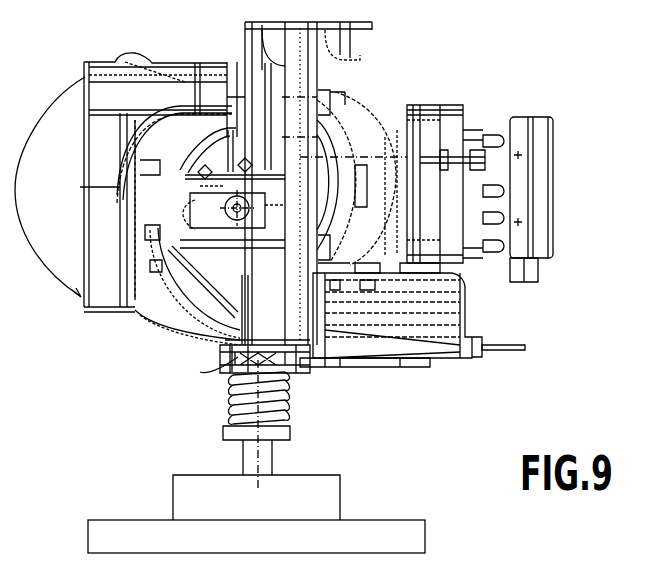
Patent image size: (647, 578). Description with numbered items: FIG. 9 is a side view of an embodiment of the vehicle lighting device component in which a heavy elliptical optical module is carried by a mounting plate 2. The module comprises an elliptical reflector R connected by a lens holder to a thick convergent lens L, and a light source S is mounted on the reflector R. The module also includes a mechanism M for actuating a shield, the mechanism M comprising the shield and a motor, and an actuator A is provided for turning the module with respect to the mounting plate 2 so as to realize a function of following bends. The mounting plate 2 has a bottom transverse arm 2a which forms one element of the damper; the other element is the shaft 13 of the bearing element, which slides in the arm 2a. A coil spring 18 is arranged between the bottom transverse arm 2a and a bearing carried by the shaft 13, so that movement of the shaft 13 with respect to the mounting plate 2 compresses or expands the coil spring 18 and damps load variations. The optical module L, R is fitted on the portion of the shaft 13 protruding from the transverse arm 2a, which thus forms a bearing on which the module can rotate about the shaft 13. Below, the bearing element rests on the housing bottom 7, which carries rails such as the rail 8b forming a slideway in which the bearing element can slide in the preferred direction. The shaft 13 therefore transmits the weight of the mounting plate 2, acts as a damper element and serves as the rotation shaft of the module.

The convergent lens L is at (53, 130).
The mounting plate 2 is at (297, 70).
The bottom transverse arm 2a is at (247, 353).
The mechanism for actuating a shield M is at (198, 208).
The elliptical reflector R is at (357, 115).
The light source S is at (538, 176).
The actuator A is at (438, 298).
The coil spring 18 is at (283, 398).
The shaft 13 is at (245, 449).
The rail 8b is at (330, 488).
The housing bottom 7 is at (115, 525).